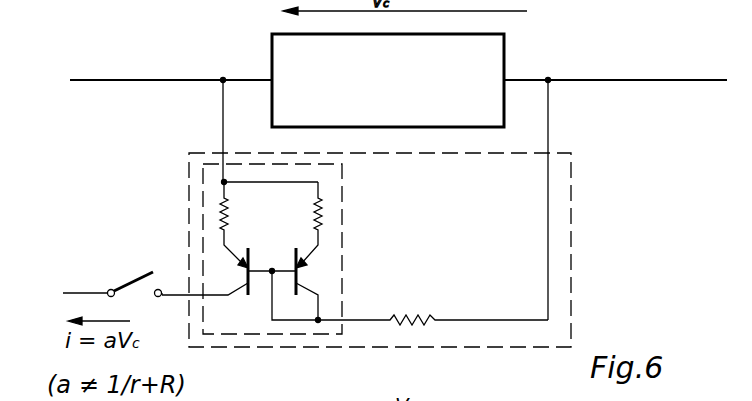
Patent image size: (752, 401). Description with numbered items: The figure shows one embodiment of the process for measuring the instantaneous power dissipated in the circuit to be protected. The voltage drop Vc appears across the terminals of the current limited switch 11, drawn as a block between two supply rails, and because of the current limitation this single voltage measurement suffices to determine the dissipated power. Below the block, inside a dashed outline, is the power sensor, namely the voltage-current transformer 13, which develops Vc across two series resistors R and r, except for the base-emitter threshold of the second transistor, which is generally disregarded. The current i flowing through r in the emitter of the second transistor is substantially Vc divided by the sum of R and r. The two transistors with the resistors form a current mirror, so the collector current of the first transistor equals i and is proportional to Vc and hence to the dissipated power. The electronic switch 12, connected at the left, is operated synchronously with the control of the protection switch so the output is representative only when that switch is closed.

The current limited switch 11 is at (513, 52).
The electronic switch 12 is at (127, 280).
The voltage-current transformer 13 is at (579, 205).